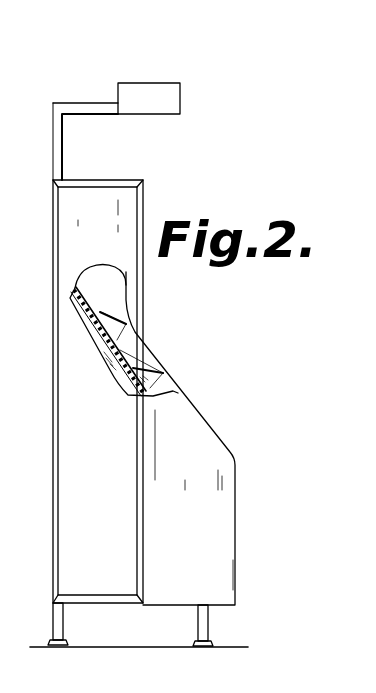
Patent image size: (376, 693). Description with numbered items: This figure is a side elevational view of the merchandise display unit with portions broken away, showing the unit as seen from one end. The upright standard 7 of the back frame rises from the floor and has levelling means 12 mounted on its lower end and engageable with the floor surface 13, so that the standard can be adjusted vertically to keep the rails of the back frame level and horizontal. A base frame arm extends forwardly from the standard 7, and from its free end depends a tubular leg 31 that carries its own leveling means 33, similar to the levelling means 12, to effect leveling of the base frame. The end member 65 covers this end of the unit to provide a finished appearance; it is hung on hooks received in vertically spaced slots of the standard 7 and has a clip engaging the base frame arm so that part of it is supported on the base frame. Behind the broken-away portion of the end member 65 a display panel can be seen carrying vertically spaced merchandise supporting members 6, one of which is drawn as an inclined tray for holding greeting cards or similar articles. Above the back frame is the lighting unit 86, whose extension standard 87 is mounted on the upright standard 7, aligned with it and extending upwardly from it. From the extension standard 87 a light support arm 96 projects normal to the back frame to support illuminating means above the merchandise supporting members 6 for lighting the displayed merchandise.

The merchandise supporting member 6 is at (115, 316).
The standard 7 is at (65, 622).
The levelling means 12 is at (68, 645).
The floor surface 13 is at (246, 647).
The leg 31 is at (209, 628).
The leveling means 33 is at (190, 646).
The end member 65 is at (73, 481).
The lighting unit 86 is at (128, 84).
The extension standard 87 is at (64, 148).
The light support arm 96 is at (68, 90).